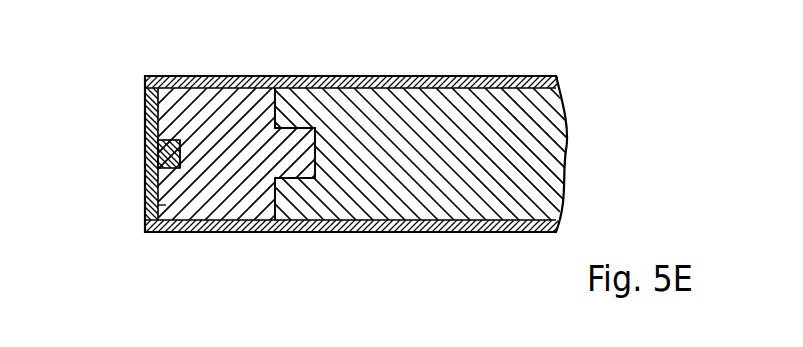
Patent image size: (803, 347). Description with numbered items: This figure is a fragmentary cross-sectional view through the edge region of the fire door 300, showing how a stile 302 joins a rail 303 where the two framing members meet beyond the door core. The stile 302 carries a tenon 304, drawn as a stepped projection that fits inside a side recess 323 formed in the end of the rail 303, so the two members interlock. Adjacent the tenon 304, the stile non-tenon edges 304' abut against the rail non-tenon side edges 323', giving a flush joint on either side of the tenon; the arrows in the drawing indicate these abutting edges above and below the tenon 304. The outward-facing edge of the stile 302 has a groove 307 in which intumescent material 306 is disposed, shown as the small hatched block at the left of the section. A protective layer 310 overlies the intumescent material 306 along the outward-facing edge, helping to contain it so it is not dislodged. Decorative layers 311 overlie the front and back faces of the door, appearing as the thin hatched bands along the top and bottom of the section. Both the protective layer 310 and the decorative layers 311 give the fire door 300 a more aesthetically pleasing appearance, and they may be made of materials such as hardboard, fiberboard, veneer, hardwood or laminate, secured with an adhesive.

The fire door 300 is at (185, 245).
The stile 302 is at (158, 205).
The rail 303 is at (455, 110).
The tenon 304 is at (230, 188).
The stile non-tenon edge 304' is at (227, 161).
The intumescent material 306 is at (158, 150).
The groove 307 is at (187, 155).
The protective layer 310 is at (145, 110).
The decorative layer 311 is at (260, 78).
The side recess 323 is at (363, 104).
The rail non-tenon side edge 323' is at (316, 162).